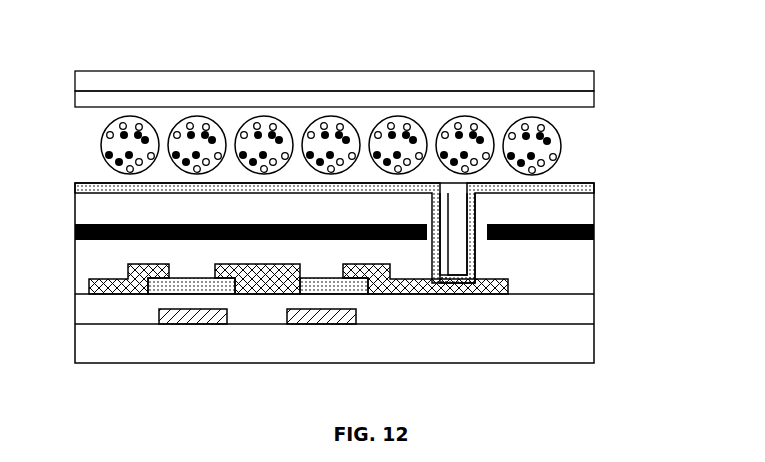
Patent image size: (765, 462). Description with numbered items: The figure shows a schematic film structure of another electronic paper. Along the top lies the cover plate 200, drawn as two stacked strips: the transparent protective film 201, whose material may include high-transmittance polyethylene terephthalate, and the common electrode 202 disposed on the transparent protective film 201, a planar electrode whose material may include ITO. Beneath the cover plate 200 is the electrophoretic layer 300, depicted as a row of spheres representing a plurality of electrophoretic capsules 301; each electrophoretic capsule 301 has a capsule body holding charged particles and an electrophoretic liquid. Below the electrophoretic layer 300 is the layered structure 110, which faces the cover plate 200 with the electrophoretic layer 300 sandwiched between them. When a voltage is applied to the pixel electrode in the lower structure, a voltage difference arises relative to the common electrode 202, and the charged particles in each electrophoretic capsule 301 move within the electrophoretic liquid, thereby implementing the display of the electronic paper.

The cover plate 200 is at (334, 54).
The transparent protective film 201 is at (573, 83).
The common electrode 202 is at (583, 31).
The electrophoretic layer 300 is at (380, 128).
The electrophoretic capsule 301 is at (560, 133).
The array substrate 110 is at (602, 195).